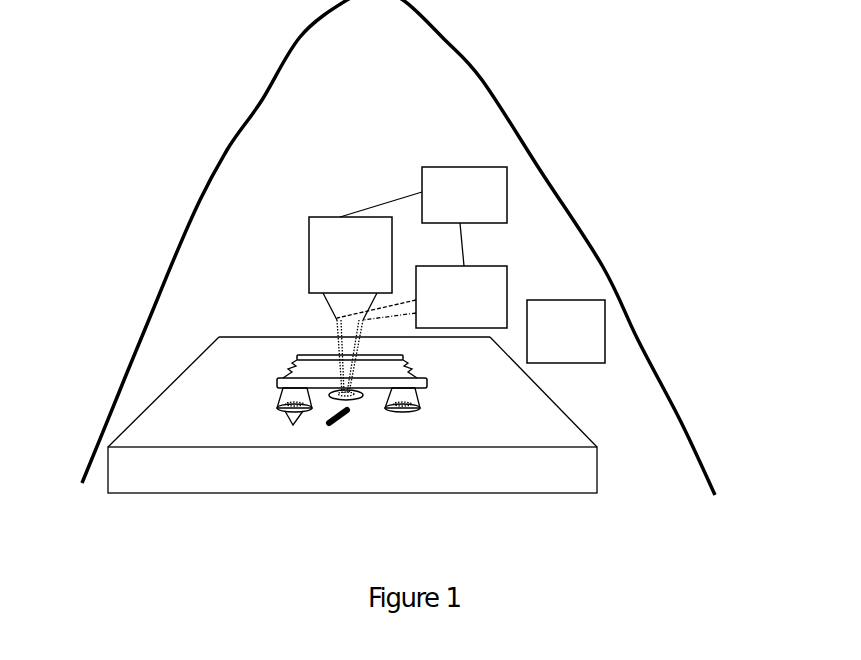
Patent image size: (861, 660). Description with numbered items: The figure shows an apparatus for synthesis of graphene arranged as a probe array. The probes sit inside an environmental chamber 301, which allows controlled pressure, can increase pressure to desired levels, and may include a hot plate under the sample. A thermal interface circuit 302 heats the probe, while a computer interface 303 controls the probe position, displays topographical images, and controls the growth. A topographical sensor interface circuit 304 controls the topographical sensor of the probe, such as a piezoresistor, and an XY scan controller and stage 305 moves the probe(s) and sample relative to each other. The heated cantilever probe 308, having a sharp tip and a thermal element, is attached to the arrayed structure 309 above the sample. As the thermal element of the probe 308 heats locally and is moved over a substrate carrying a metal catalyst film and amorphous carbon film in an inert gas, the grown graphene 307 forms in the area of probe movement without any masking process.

The environmental chamber 301 is at (398, 247).
The thermal interface circuit 302 is at (350, 305).
The computer interface 303 is at (423, 216).
The topographical sensor interface circuit 304 is at (422, 297).
The XY scan controller and stage 305 is at (566, 331).
The grown graphene 307 is at (347, 418).
The heated cantilever probe 308 is at (360, 405).
The arrayed structure 309 is at (435, 386).